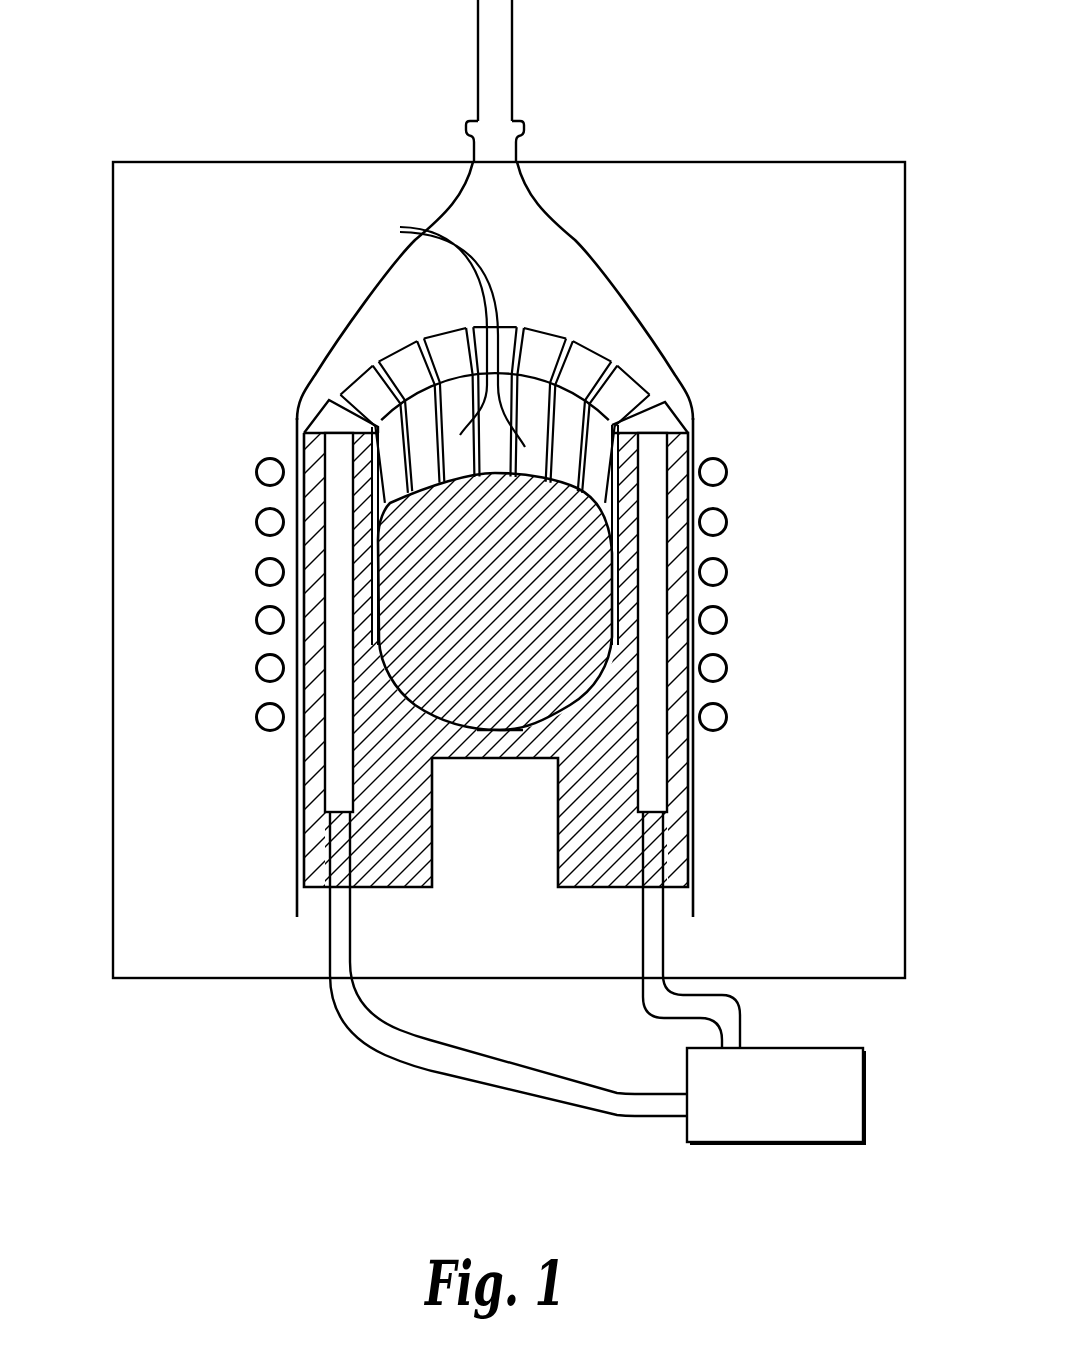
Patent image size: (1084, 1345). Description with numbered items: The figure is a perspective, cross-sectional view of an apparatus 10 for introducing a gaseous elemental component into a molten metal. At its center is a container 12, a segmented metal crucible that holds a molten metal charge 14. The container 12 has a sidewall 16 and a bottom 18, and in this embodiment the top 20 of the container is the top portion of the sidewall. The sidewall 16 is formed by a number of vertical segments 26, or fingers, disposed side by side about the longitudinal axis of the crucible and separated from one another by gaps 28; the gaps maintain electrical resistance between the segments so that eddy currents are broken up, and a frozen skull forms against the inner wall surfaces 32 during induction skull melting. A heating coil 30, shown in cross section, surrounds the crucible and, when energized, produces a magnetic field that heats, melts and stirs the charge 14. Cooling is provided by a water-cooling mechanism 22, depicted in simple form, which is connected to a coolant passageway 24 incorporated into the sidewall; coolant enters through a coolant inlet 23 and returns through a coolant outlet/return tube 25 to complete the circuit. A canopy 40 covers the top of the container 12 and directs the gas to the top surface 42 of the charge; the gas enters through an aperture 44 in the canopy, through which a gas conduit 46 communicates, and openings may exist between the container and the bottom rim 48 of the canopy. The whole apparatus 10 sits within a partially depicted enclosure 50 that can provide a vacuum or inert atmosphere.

The apparatus 10 is at (740, 319).
The container 12 is at (673, 798).
The molten metal charge 14 is at (467, 617).
The sidewall 16 is at (650, 395).
The bottom 18 is at (490, 730).
The top 20 is at (443, 342).
The water-cooling mechanism 22 is at (865, 1048).
The coolant inlet 23 is at (715, 1012).
The coolant passageway 24 is at (653, 760).
The coolant outlet/return tube 25 is at (440, 1058).
The vertical segments 26 is at (630, 375).
The gaps 28 is at (522, 343).
The heating coil 30 is at (728, 573).
The inner wall surfaces 32 is at (442, 330).
The canopy 40 is at (572, 238).
The top surface 42 is at (413, 360).
The aperture 44 is at (485, 153).
The gas conduit 46 is at (481, 103).
The bottom rim 48 is at (297, 912).
The enclosure 50 is at (113, 962).